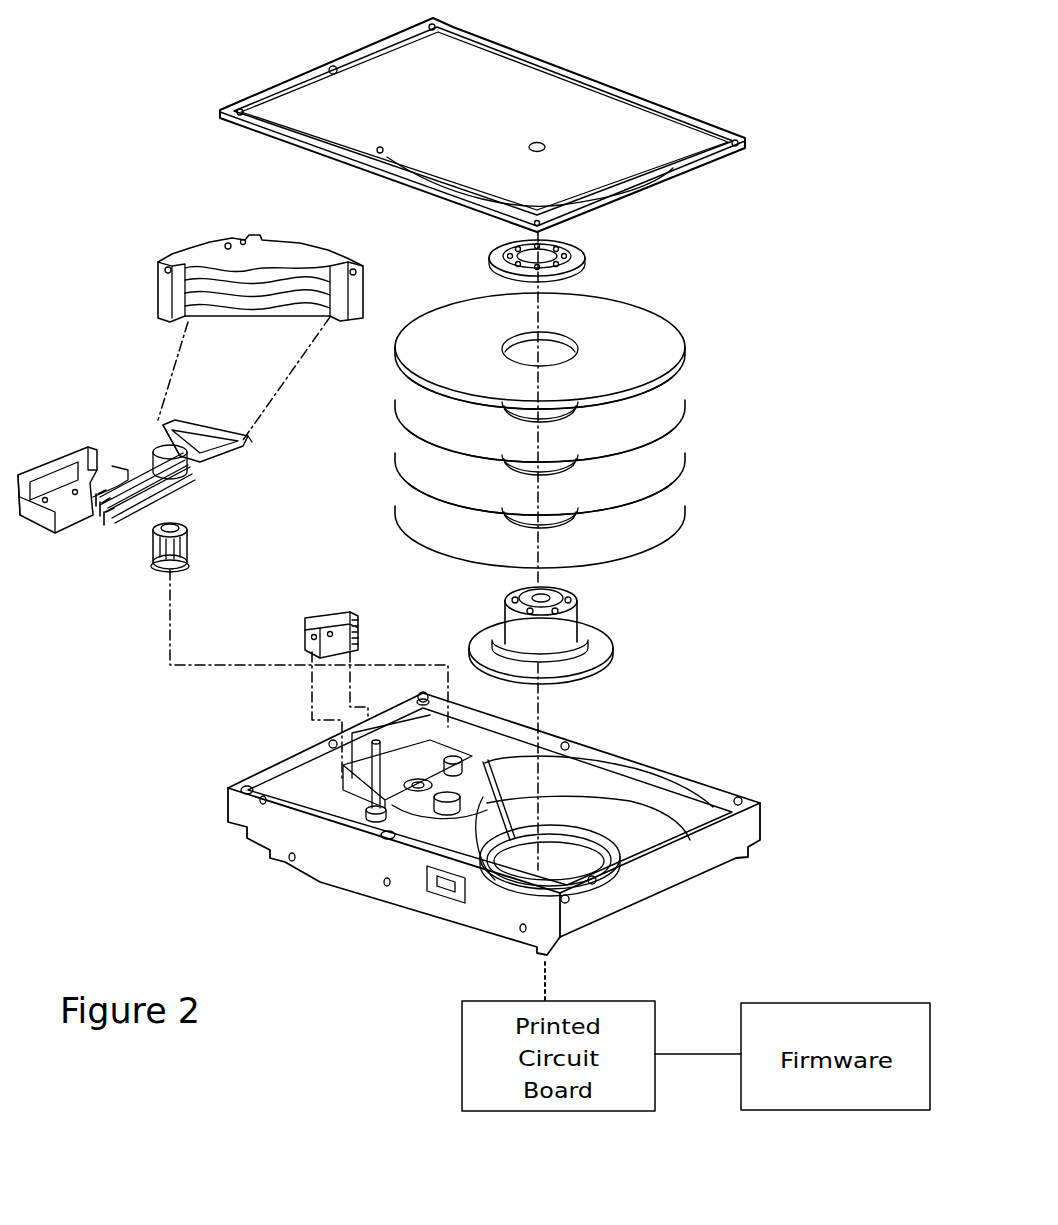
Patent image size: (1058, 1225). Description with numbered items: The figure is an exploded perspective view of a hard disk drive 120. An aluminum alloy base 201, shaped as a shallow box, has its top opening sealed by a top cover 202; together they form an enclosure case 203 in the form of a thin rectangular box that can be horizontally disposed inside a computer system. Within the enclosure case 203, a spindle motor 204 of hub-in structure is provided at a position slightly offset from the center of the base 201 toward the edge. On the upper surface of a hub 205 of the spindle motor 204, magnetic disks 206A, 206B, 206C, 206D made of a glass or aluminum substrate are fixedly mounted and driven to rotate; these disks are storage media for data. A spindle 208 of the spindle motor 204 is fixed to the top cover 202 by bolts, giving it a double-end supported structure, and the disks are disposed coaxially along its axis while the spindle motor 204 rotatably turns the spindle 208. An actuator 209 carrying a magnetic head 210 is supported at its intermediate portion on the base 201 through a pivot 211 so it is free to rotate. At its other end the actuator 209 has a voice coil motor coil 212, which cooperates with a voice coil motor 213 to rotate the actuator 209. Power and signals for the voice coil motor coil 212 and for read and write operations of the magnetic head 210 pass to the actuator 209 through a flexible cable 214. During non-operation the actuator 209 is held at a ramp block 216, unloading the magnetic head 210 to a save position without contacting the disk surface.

The hard disk drive 120 is at (731, 106).
The base 201 is at (702, 782).
The top cover 202 is at (700, 172).
The enclosure case 203 is at (640, 476).
The spindle motor 204 is at (554, 629).
The hub 205 is at (585, 650).
The magnetic disk 206A is at (665, 350).
The magnetic disk 206B is at (665, 400).
The magnetic disk 206C is at (665, 455).
The magnetic disk 206D is at (587, 526).
The spindle 208 is at (513, 622).
The actuator 209 is at (117, 532).
The magnetic head 210 is at (105, 530).
The pivot 211 is at (194, 548).
The voice coil motor coil 212 is at (198, 420).
The voice coil motor 213 is at (213, 236).
The flexible cable 214 is at (130, 440).
The ramp block 216 is at (305, 622).